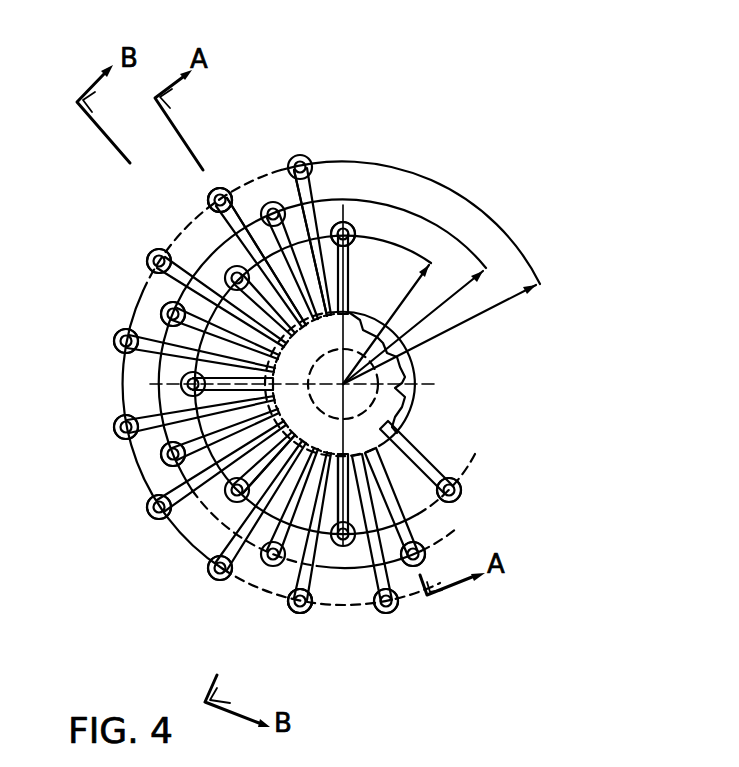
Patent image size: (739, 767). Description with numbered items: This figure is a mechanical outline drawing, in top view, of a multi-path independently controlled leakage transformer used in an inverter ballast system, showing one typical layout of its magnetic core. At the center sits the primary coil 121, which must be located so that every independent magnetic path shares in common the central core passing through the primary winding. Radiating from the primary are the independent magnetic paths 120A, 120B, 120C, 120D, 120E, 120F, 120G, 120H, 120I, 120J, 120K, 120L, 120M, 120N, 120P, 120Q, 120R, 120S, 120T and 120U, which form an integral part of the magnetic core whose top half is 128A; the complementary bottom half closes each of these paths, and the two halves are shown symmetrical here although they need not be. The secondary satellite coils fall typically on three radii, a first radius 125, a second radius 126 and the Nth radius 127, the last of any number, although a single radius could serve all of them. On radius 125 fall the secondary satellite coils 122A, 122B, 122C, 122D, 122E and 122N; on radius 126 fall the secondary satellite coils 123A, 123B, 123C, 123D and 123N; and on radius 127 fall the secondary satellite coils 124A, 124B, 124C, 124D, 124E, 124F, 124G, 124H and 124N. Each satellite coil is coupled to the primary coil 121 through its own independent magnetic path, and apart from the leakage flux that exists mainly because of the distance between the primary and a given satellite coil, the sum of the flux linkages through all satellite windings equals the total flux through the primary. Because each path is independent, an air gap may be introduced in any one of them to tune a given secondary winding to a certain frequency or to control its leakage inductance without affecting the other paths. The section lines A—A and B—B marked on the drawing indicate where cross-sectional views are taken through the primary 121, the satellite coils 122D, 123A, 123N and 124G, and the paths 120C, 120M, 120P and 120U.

The primary coil 121 is at (408, 412).
The magnetic core top half 128A is at (398, 388).
The first radius 125 is at (443, 278).
The second radius 126 is at (497, 287).
The Nth radius 127 is at (547, 297).
The independent magnetic path 120A is at (341, 547).
The independent magnetic path 120B is at (297, 613).
The independent magnetic path 120C is at (264, 562).
The independent magnetic path 120D is at (208, 572).
The independent magnetic path 120E is at (228, 499).
The independent magnetic path 120F is at (147, 506).
The independent magnetic path 120G is at (161, 455).
The independent magnetic path 120H is at (127, 416).
The independent magnetic path 120I is at (181, 383).
The independent magnetic path 120J is at (113, 344).
The independent magnetic path 120K is at (172, 300).
The independent magnetic path 120L is at (153, 252).
The independent magnetic path 120M is at (252, 264).
The independent magnetic path 120N is at (520, 637).
The independent magnetic path 120P is at (214, 190).
The independent magnetic path 120Q is at (273, 203).
The independent magnetic path 120R is at (312, 171).
The independent magnetic path 120S is at (349, 290).
The independent magnetic path 120T is at (441, 483).
The independent magnetic path 120U is at (412, 542).
The secondary satellite coil 122A is at (331, 540).
The secondary satellite coil 122B is at (250, 483).
The secondary satellite coil 122C is at (200, 391).
The secondary satellite coil 122D is at (230, 268).
The secondary satellite coil 122E is at (352, 218).
The secondary satellite coil 122N is at (585, 484).
The secondary satellite coil 123A is at (289, 605).
The secondary satellite coil 123B is at (177, 464).
The secondary satellite coil 123C is at (161, 308).
The secondary satellite coil 123D is at (247, 190).
The secondary satellite coil 123N is at (573, 540).
The secondary satellite coil 124A is at (307, 612).
The secondary satellite coil 124B is at (230, 557).
The secondary satellite coil 124C is at (157, 518).
The secondary satellite coil 124D is at (126, 438).
The secondary satellite coil 124E is at (127, 332).
The secondary satellite coil 124F is at (158, 250).
The secondary satellite coil 124G is at (227, 189).
The secondary satellite coil 124H is at (312, 190).
The secondary satellite coil 124N is at (519, 614).